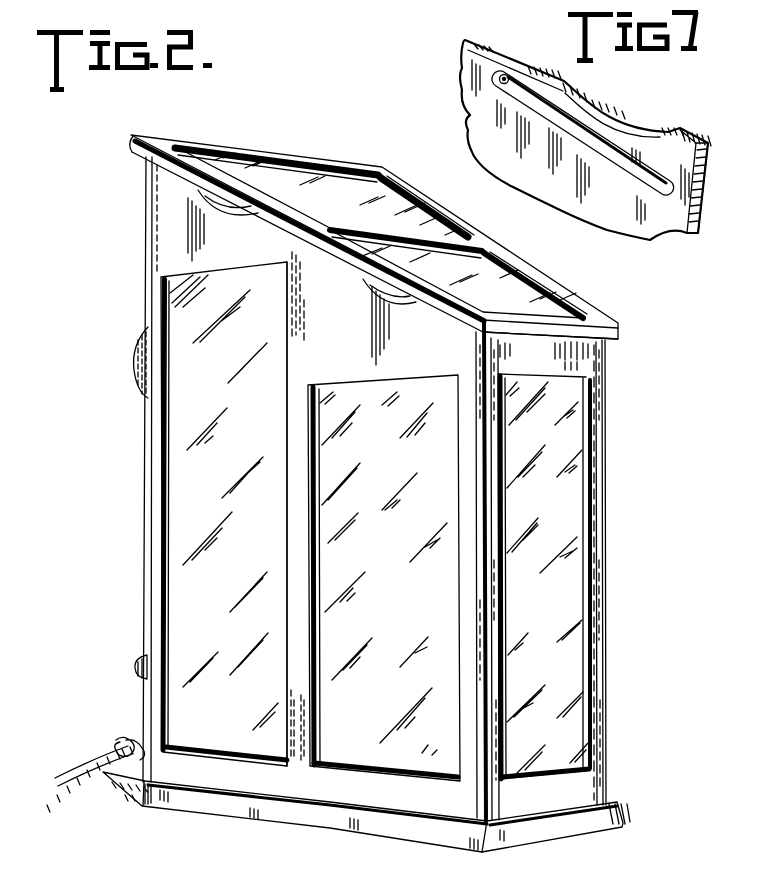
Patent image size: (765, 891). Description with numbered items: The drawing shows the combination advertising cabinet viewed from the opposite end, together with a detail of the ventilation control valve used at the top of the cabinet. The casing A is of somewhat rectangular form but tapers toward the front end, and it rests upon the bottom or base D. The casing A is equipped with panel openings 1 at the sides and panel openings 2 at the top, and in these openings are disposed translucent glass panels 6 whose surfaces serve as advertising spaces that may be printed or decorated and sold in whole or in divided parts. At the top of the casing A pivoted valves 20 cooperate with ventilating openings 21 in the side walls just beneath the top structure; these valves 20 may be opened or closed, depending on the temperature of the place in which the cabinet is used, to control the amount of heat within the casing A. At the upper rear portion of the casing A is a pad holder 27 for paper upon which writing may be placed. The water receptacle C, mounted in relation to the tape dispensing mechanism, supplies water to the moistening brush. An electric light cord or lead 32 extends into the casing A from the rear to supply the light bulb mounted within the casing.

In FIG. 2, the panel openings 1 is at (168, 582).
In FIG. 2, the panel openings 2 is at (403, 197).
In FIG. 2, the glass panels 6 is at (182, 492).
In FIG. 7, the valves 20 is at (613, 160).
In FIG. 2, the ventilating openings 21 is at (237, 206).
In FIG. 7, the ventilating openings 21 is at (607, 117).
In FIG. 2, the pad holder 27 is at (140, 362).
In FIG. 2, the electric light cord 32 is at (80, 771).
In FIG. 2, the casing A is at (600, 513).
In FIG. 7, the casing A is at (692, 173).
In FIG. 2, the water receptacle C is at (140, 695).
In FIG. 2, the base D is at (417, 833).